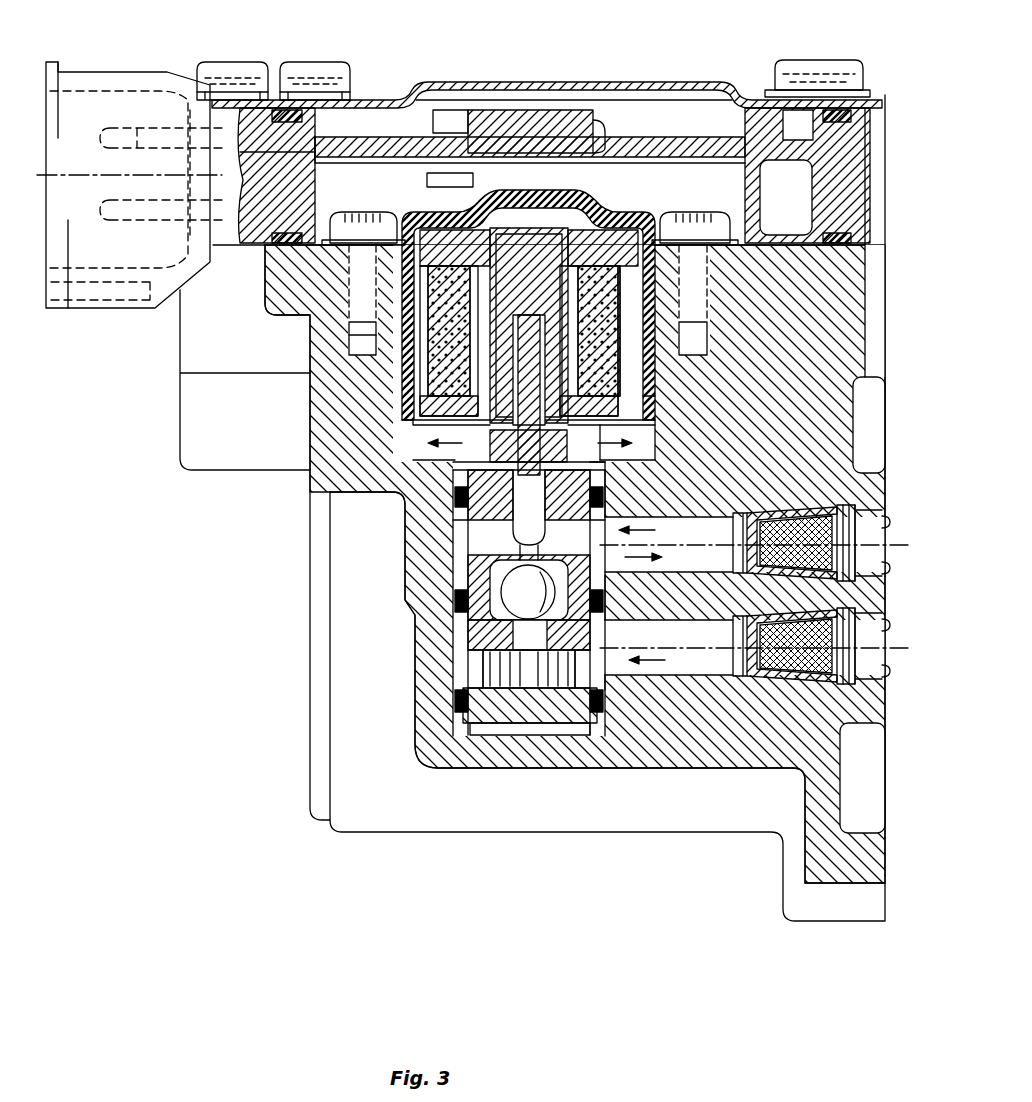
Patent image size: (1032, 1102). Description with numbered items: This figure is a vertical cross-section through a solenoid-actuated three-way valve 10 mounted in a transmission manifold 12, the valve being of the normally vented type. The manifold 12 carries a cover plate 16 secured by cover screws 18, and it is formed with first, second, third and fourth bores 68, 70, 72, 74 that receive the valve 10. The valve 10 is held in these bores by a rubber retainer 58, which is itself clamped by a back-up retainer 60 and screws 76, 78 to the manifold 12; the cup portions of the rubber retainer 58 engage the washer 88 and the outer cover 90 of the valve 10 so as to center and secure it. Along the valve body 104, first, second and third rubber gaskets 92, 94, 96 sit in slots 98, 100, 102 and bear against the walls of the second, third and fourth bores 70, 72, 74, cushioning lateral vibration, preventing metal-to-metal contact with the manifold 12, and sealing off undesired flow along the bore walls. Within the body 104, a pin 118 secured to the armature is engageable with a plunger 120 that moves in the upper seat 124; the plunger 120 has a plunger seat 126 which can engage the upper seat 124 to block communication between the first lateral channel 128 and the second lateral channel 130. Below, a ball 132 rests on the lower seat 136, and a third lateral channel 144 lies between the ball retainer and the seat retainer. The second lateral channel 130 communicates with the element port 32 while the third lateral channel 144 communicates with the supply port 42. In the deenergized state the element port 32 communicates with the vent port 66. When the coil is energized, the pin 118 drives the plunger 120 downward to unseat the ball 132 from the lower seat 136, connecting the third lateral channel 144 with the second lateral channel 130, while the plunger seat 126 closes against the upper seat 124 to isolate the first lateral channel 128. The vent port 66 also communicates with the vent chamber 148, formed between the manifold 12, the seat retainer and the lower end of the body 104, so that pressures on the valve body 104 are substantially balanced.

The solenoid-actuated three-way valve 10 is at (420, 428).
The transmission manifold 12 is at (740, 760).
The cover plate 16 is at (473, 82).
The cover screws 18 is at (198, 62).
The element port 32 is at (884, 546).
The supply port 42 is at (884, 648).
The rubber retainer 58 is at (619, 232).
The back-up retainer 60 is at (551, 197).
The vent port 66 is at (640, 401).
The first bore 68 is at (410, 382).
The second bore 70 is at (457, 582).
The third bore 72 is at (470, 678).
The fourth bore 74 is at (484, 750).
The screw 76 is at (344, 212).
The screw 78 is at (711, 213).
The washer 88 is at (610, 240).
The outer cover 90 is at (352, 334).
The first rubber gasket 92 is at (456, 496).
The second rubber gasket 94 is at (458, 603).
The third rubber gasket 96 is at (458, 700).
The slot 98 is at (620, 471).
The slot 100 is at (602, 606).
The slot 102 is at (610, 712).
The valve body 104 is at (602, 470).
The pin 118 is at (628, 381).
The plunger 120 is at (527, 522).
The upper seat 124 is at (458, 522).
The plunger seat 126 is at (622, 430).
The first lateral channel 128 is at (640, 436).
The second lateral channel 130 is at (602, 522).
The ball 132 is at (468, 642).
The lower seat 136 is at (496, 722).
The third lateral channel 144 is at (618, 680).
The vent chamber 148 is at (554, 724).